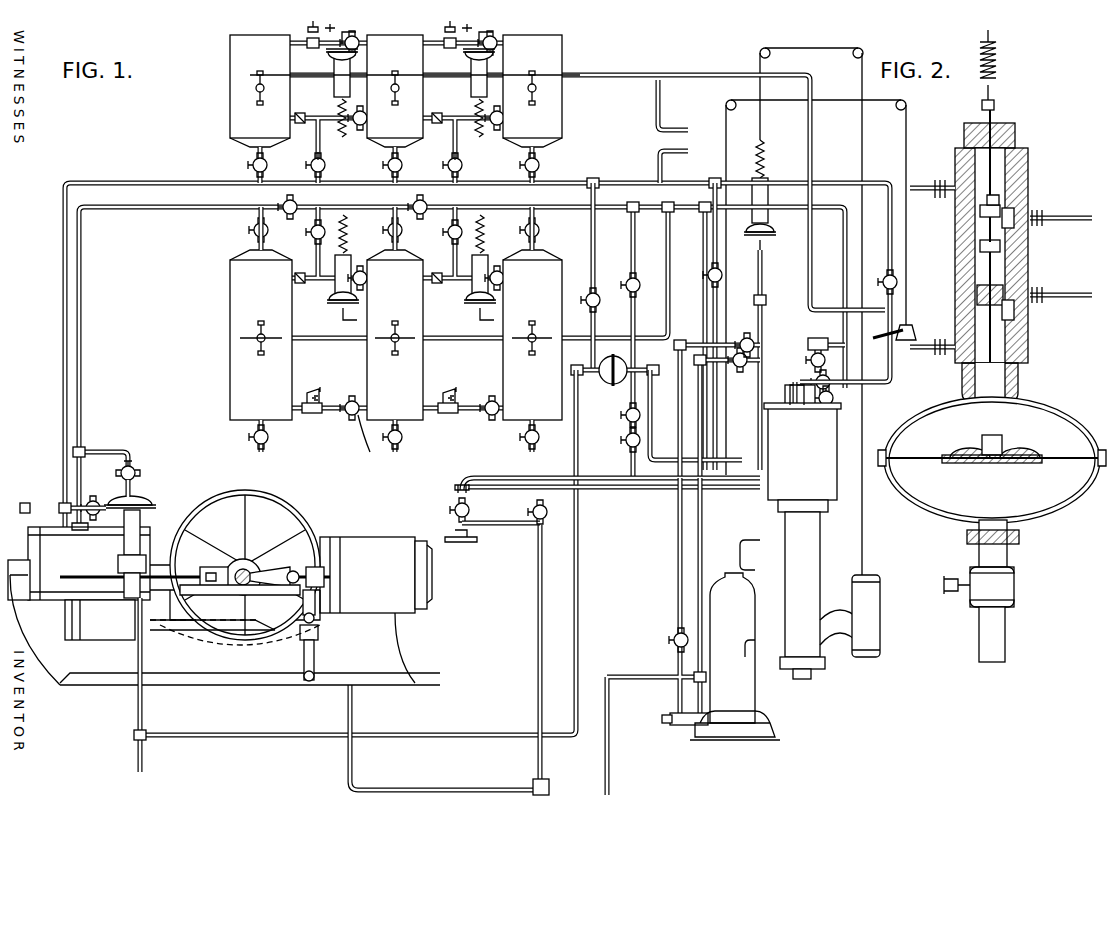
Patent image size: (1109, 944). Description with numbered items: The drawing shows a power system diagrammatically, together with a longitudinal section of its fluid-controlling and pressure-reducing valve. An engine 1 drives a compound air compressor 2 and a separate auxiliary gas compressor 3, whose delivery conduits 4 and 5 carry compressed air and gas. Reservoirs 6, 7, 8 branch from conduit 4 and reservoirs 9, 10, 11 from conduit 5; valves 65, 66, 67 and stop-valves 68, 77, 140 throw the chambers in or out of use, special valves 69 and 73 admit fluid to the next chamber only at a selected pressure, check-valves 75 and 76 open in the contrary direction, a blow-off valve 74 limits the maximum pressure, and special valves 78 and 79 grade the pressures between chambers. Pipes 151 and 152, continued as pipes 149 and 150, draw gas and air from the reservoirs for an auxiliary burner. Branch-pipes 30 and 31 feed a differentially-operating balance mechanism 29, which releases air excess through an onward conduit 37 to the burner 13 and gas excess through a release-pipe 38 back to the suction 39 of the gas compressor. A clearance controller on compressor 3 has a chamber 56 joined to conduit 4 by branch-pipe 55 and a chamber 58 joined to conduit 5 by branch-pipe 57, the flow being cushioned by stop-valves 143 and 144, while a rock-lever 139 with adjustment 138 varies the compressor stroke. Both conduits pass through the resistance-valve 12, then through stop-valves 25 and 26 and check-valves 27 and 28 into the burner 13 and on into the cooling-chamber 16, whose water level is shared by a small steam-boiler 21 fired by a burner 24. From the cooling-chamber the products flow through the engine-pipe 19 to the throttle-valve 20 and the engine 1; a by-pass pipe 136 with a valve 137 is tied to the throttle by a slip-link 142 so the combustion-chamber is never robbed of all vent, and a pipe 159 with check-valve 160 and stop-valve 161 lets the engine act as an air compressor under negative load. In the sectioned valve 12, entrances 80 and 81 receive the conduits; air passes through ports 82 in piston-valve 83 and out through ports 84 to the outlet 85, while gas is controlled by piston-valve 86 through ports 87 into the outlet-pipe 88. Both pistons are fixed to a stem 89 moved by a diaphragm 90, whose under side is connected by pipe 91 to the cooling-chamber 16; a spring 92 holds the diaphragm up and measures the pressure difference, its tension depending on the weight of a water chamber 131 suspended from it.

In FIG. 1, the engine 1 is at (398, 571).
In FIG. 1, the compressor 2 is at (79, 563).
In FIG. 1, the auxiliary compressor 3 is at (100, 620).
In FIG. 1, the conduit 4 is at (80, 380).
In FIG. 1, the conduit 5 is at (65, 385).
In FIG. 1, the reservoir 6 is at (532, 329).
In FIG. 1, the reservoir chamber 7 is at (395, 329).
In FIG. 1, the reservoir chamber 8 is at (261, 329).
In FIG. 1, the reservoir 9 is at (532, 109).
In FIG. 1, the reservoir chamber 10 is at (395, 109).
In FIG. 1, the reservoir chamber 11 is at (260, 109).
In FIG. 1, the resistance-valve 12 is at (763, 176).
In FIG. 2, the resistance-valve 12 is at (1005, 236).
In FIG. 1, the burner 13 is at (802, 442).
In FIG. 1, the cooling-chamber 16 is at (830, 632).
In FIG. 1, the engine-pipe 19 is at (553, 473).
In FIG. 1, the throttle-valve 20 is at (450, 506).
In FIG. 1, the steam-boiler 21 is at (735, 656).
In FIG. 1, the burner 24 is at (650, 725).
In FIG. 1, the stop-valve 25 is at (832, 343).
In FIG. 2, the stop-valve 26 is at (908, 325).
In FIG. 1, the check-valve 27 is at (835, 400).
In FIG. 1, the check-valve 28 is at (832, 382).
In FIG. 1, the differentially-operating balance mechanism 29 is at (615, 378).
In FIG. 1, the branch-pipe 30 is at (638, 253).
In FIG. 1, the branch-pipe 31 is at (593, 270).
In FIG. 1, the onward conduit 37 is at (650, 423).
In FIG. 1, the release-pipe 38 is at (578, 439).
In FIG. 1, the suction 39 is at (153, 656).
In FIG. 1, the branch-pipe 55 is at (123, 452).
In FIG. 1, the chamber 56 is at (144, 498).
In FIG. 1, the branch-pipe 57 is at (106, 503).
In FIG. 1, the chamber 58 is at (214, 510).
In FIG. 1, the valve 65 is at (540, 228).
In FIG. 1, the valve 66 is at (400, 228).
In FIG. 1, the stop-valve 67 is at (254, 233).
In FIG. 1, the stop-valve 68 is at (492, 415).
In FIG. 1, the special valve 69 is at (448, 413).
In FIG. 1, the special valve 73 is at (314, 413).
In FIG. 1, the blow-off valve 74 is at (268, 442).
In FIG. 1, the check-valve 75 is at (300, 284).
In FIG. 1, the check-valve 76 is at (436, 284).
In FIG. 1, the valve 77 is at (298, 204).
In FIG. 1, the special valve 78 is at (342, 306).
In FIG. 1, the special valve 79 is at (472, 306).
In FIG. 2, the entrance 80 is at (933, 354).
In FIG. 2, the entrance 81 is at (930, 192).
In FIG. 2, the ports 82 is at (1018, 363).
In FIG. 2, the piston-valve 83 is at (1012, 323).
In FIG. 2, the ports 84 is at (1006, 296).
In FIG. 2, the outlet 85 is at (1050, 295).
In FIG. 2, the piston-valve 86 is at (1000, 198).
In FIG. 2, the ports 87 is at (1014, 218).
In FIG. 2, the outlet-pipe 88 is at (1050, 216).
In FIG. 2, the stem 89 is at (1024, 410).
In FIG. 2, the diaphragm 90 is at (1025, 493).
In FIG. 1, the pipe 91 is at (757, 257).
In FIG. 2, the pipe 91 is at (1008, 552).
In FIG. 1, the spring 92 is at (764, 145).
In FIG. 2, the spring 92 is at (1002, 73).
In FIG. 1, the separate chamber 131 is at (879, 577).
In FIG. 1, the by-pass pipe 136 is at (538, 633).
In FIG. 1, the valve 137 is at (548, 514).
In FIG. 1, the adjustment 138 is at (315, 610).
In FIG. 1, the rock-lever 139 is at (316, 660).
In FIG. 1, the stop-valve 140 is at (368, 445).
In FIG. 1, the slip-link 142 is at (507, 521).
In FIG. 1, the stop-valve 143 is at (136, 468).
In FIG. 1, the stop-valve 144 is at (88, 507).
In FIG. 1, the pipe 149 is at (658, 129).
In FIG. 1, the pipe 150 is at (660, 165).
In FIG. 1, the pipe 151 is at (602, 75).
In FIG. 1, the pipe 152 is at (612, 311).
In FIG. 1, the pipe 159 is at (671, 310).
In FIG. 1, the check-valve 160 is at (648, 456).
In FIG. 1, the stop-valve 161 is at (641, 418).